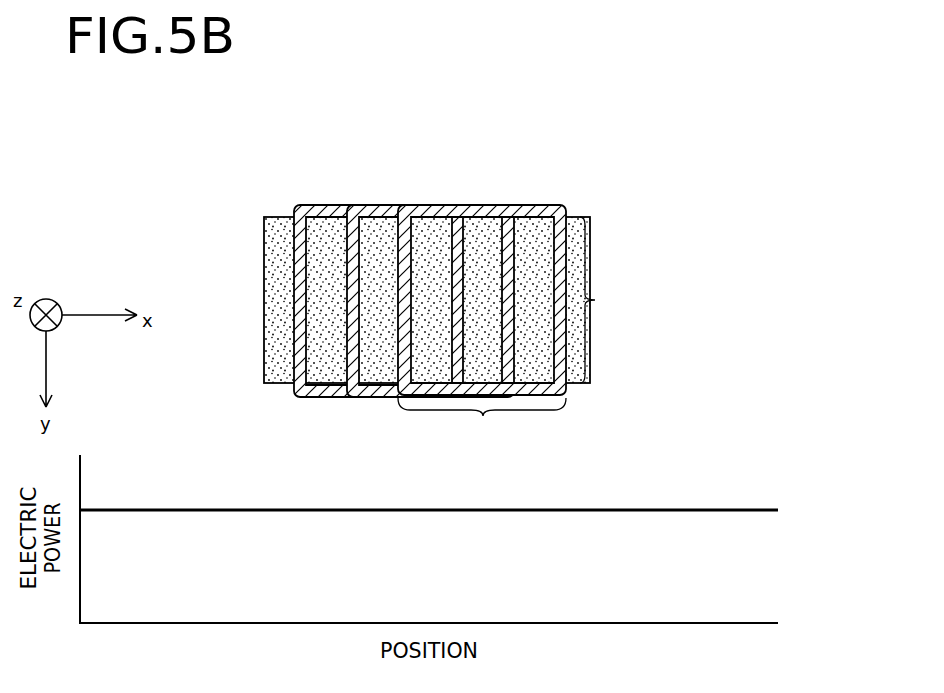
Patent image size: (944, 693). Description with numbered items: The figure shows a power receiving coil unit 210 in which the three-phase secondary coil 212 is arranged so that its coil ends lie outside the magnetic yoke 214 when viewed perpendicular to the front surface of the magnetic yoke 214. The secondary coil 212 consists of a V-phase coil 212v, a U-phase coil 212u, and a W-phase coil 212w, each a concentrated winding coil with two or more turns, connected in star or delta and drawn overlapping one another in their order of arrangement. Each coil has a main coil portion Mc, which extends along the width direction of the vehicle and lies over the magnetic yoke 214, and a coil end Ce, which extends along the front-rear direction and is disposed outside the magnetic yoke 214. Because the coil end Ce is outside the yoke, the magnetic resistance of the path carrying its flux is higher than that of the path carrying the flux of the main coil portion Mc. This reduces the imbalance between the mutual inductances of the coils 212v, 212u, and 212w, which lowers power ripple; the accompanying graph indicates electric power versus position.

The power receiving coil unit 210 is at (485, 230).
The secondary coil 212 is at (421, 230).
The V-phase coil 212v is at (315, 206).
The U-phase coil 212u is at (380, 206).
The W-phase coil 212w is at (482, 258).
The magnetic yoke 214 is at (583, 217).
The main coil portion Mc is at (608, 300).
The coil end Ce is at (482, 424).